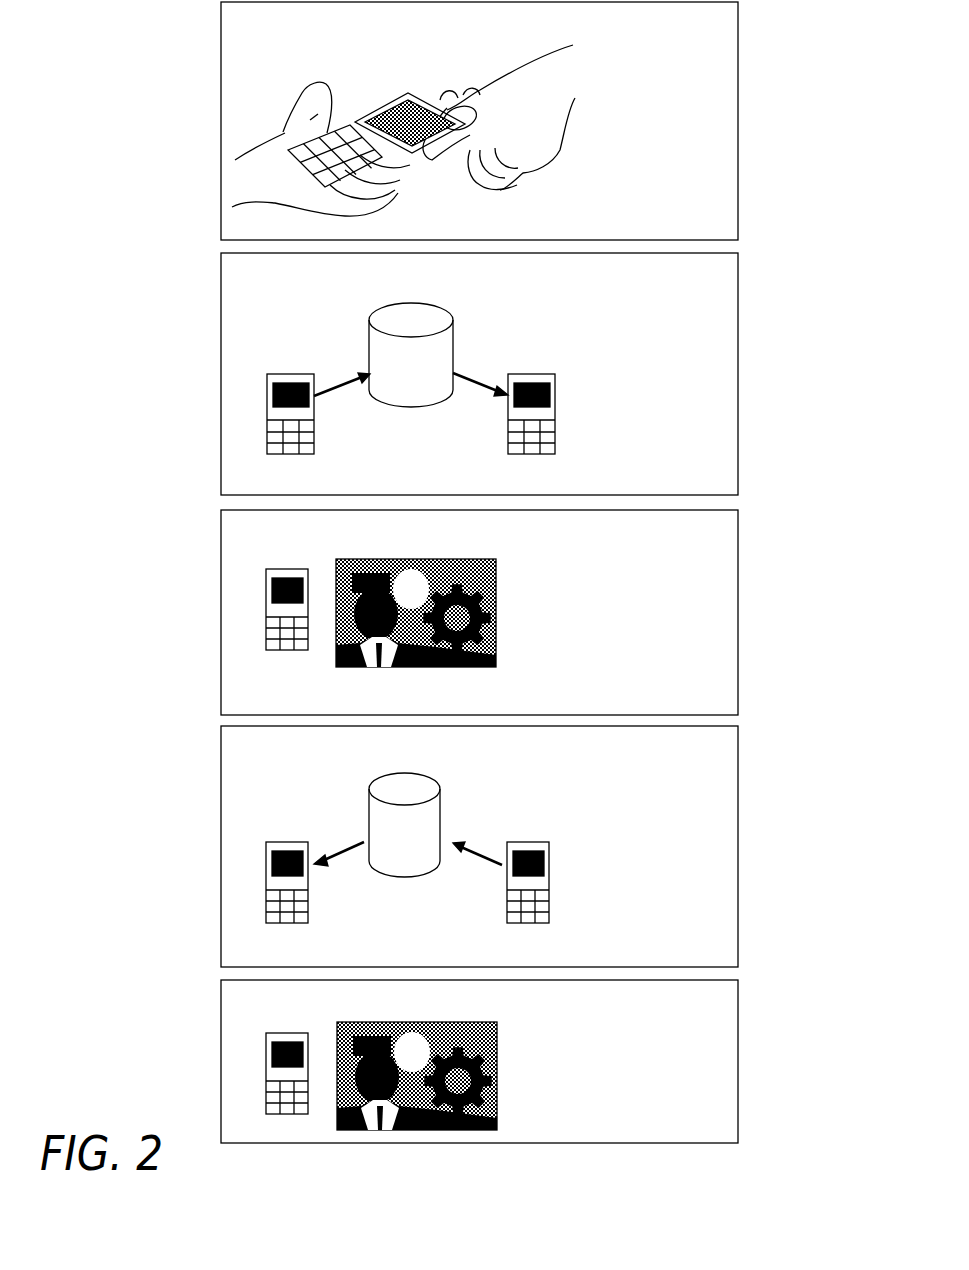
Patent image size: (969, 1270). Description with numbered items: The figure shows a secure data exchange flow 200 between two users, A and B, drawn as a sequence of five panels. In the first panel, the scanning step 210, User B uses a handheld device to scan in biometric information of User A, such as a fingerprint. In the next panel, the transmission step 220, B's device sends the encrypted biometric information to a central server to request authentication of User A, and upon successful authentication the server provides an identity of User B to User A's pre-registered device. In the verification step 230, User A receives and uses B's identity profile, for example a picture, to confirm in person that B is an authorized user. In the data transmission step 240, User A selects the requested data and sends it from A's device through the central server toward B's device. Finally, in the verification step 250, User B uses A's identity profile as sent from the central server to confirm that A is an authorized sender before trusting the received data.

The secure data exchange flow 200 is at (836, 29).
The scanning step 210 is at (706, 36).
The transmission to central server step 220 is at (708, 288).
The verification of User B step 230 is at (706, 549).
The data transmission step 240 is at (706, 768).
The verification of User A step 250 is at (707, 1019).